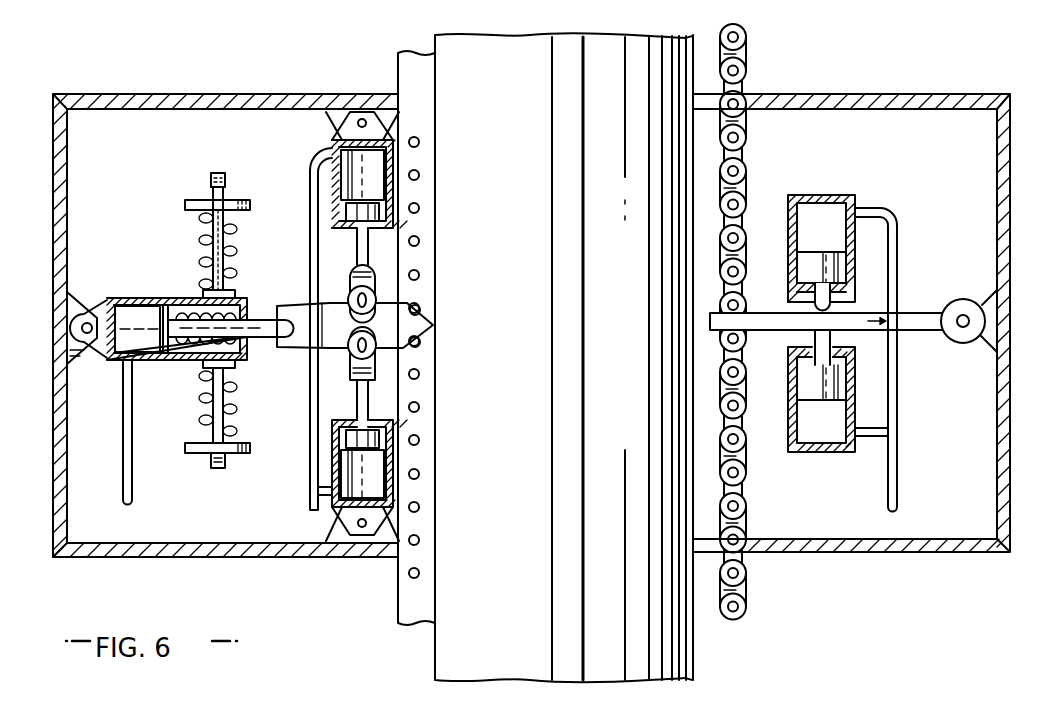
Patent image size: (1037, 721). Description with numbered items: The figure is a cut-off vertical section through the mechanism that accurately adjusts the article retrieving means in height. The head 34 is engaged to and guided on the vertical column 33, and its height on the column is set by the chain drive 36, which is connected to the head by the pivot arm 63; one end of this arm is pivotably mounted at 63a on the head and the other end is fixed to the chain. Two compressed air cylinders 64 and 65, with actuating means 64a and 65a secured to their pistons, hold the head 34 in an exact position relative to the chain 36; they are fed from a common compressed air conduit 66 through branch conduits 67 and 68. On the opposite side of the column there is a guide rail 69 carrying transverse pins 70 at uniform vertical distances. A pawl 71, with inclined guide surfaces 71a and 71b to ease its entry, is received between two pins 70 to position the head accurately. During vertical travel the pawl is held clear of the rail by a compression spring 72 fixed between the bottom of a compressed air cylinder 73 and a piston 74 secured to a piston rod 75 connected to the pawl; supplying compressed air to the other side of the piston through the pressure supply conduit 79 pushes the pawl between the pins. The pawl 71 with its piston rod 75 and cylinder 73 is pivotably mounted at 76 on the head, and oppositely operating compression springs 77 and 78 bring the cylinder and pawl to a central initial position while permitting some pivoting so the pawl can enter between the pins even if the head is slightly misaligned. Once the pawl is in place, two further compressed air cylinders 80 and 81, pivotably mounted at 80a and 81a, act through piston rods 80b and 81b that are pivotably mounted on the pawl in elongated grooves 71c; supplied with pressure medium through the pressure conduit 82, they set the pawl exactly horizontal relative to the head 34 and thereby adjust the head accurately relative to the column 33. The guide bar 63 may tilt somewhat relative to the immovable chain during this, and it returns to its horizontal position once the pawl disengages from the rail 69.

The vertical column 33 is at (495, 605).
The head 34 is at (178, 140).
The chain drive 36 is at (748, 184).
The pivot arm 63 is at (888, 331).
The pivot mounting 63a is at (963, 343).
The compressed air cylinder 64 is at (827, 197).
The actuating means 64a is at (830, 307).
The compressed air cylinder 65 is at (808, 453).
The actuating means 65a is at (832, 350).
The common compressed air conduit 66 is at (900, 488).
The branch conduit 67 is at (873, 209).
The branch conduit 68 is at (877, 436).
The guide rail 69 is at (420, 461).
The transverse pins 70 is at (421, 407).
The pawl 71 is at (382, 330).
The inclined guide surface 71a is at (433, 317).
The inclined guide surface 71b is at (433, 337).
The elongated grooves 71c is at (368, 300).
The compression spring 72 is at (202, 306).
The compressed air cylinder 73 is at (155, 300).
The piston 74 is at (165, 344).
The piston rod 75 is at (262, 332).
The pivot mounting 76 is at (88, 322).
The compression spring 77 is at (234, 244).
The compression spring 78 is at (241, 416).
The pressure supply conduit 79 is at (134, 481).
The compressed air cylinder 80 is at (392, 162).
The pivot mounting 80a is at (362, 119).
The piston rod 80b is at (372, 258).
The compressed air cylinder 81 is at (393, 488).
The pivot mounting 81a is at (362, 528).
The piston rod 81b is at (372, 412).
The pressure conduit 82 is at (308, 427).